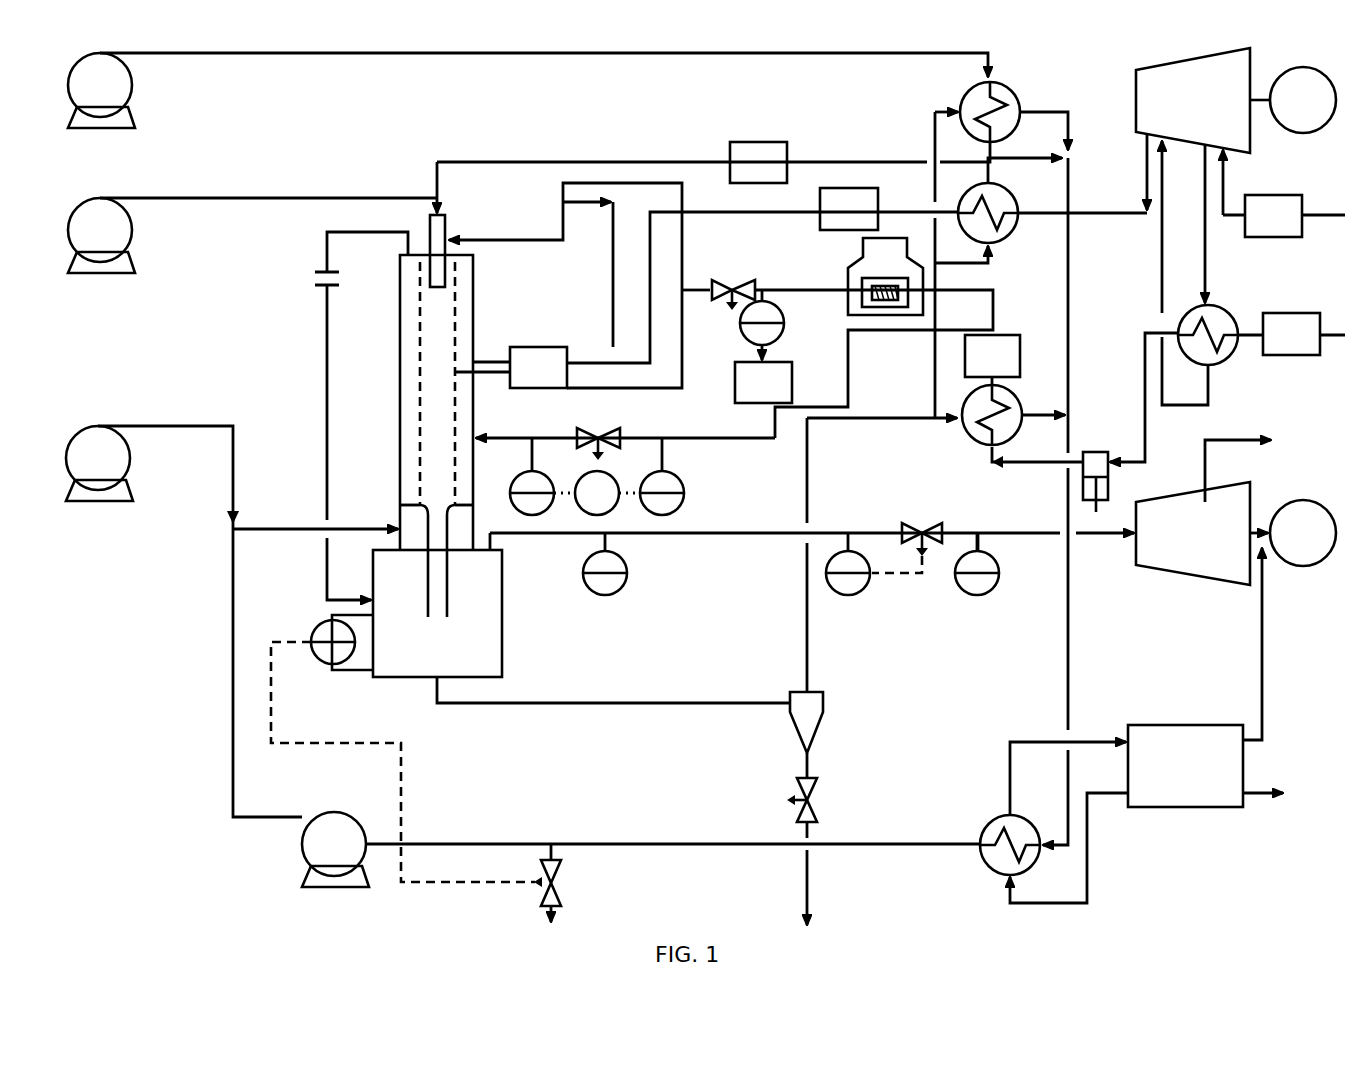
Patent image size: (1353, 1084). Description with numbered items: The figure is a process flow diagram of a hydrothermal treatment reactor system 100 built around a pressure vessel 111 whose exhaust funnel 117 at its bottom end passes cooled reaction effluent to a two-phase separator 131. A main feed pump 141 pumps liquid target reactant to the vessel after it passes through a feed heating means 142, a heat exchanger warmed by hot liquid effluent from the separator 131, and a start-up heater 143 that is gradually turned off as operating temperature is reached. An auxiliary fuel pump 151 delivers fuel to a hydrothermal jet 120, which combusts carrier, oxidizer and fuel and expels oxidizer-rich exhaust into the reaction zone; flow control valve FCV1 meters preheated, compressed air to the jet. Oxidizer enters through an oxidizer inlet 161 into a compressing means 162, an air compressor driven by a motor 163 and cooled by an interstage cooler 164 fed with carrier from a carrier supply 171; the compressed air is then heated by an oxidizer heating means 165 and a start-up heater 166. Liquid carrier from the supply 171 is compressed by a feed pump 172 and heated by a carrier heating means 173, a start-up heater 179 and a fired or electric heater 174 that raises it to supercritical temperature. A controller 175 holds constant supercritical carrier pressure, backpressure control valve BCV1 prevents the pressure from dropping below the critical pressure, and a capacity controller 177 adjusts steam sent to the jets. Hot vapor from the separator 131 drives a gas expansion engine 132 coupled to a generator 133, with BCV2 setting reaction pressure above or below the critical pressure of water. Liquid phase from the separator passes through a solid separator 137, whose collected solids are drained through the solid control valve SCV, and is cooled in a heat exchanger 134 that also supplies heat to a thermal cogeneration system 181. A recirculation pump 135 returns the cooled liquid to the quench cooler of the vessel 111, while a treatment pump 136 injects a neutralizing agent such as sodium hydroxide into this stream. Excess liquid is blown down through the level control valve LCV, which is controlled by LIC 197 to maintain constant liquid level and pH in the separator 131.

The reactor system 100 is at (162, 892).
The pressure vessel 111 is at (476, 300).
The exhaust funnel 117 is at (400, 512).
The hydrothermal jet 120 is at (518, 379).
The 2-phase separator 131 is at (417, 654).
The gas expansion engine 132 is at (1173, 545).
The generator 133 is at (1283, 545).
The heat exchanger 134 is at (985, 865).
The recirculation pump 135 is at (314, 856).
The treatment pump 136 is at (78, 470).
The solid separator 137 is at (823, 712).
The main feed pump 141 is at (80, 97).
The feed heating means 142 is at (1010, 90).
The start-up heater 143 is at (738, 174).
The auxiliary fuel pump 151 is at (80, 242).
The oxidizer inlet 161 is at (1253, 228).
The means for compressing the oxidizer 162 is at (1173, 109).
The motor 163 is at (1283, 112).
The interstage cooler 164 is at (1228, 311).
The oxidizer heating means 165 is at (1012, 240).
The start-up heater 166 is at (829, 221).
The carrier supply 171 is at (1271, 346).
The feed pump 172 is at (1083, 482).
The carrier heating means 173 is at (965, 436).
The heater 174 is at (848, 265).
The controller 175 is at (783, 330).
The capacity controller 177 is at (743, 394).
The start-up heater 179 is at (972, 368).
The thermal cogeneration system 181 is at (1165, 778).
The LIC 197 is at (318, 630).
The backpressure control valve BCV1 is at (712, 278).
The backpressure control valve BCV2 is at (902, 523).
The flow control valve FCV1 is at (628, 418).
The solid control valve SCV is at (797, 783).
The level control valve LCV is at (562, 866).